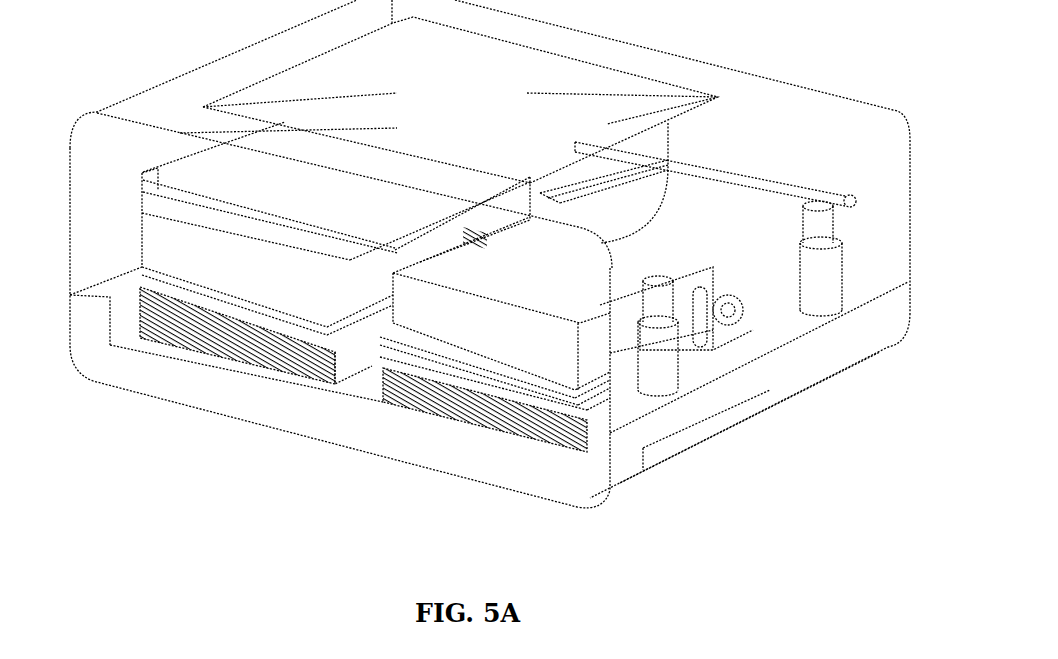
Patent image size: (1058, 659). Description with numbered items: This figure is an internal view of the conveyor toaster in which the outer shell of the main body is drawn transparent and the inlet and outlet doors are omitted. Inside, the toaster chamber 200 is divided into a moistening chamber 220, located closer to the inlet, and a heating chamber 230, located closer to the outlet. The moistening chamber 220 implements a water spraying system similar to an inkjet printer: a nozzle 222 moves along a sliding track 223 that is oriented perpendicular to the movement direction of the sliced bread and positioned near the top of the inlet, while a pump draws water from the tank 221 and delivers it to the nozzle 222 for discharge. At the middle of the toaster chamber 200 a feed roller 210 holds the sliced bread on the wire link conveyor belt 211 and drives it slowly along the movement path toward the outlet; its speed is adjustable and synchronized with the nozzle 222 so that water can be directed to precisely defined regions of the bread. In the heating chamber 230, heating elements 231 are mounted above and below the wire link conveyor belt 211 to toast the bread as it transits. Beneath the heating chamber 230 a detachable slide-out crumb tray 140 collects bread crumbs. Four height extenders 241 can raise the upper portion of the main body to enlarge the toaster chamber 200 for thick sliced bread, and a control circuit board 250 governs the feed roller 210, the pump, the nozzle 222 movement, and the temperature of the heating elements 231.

The crumb tray 140 is at (738, 430).
The toaster chamber 200 is at (134, 319).
The feed roller 210 is at (727, 341).
The wire link conveyor belt 211 is at (377, 362).
The moistening chamber 220 is at (902, 301).
The tank 221 is at (447, 310).
The nozzle 222 is at (615, 207).
The sliding track 223 is at (755, 182).
The heating chamber 230 is at (744, 384).
The heating elements 231 is at (231, 316).
The height extenders 241 is at (823, 221).
The control circuit board 250 is at (203, 181).